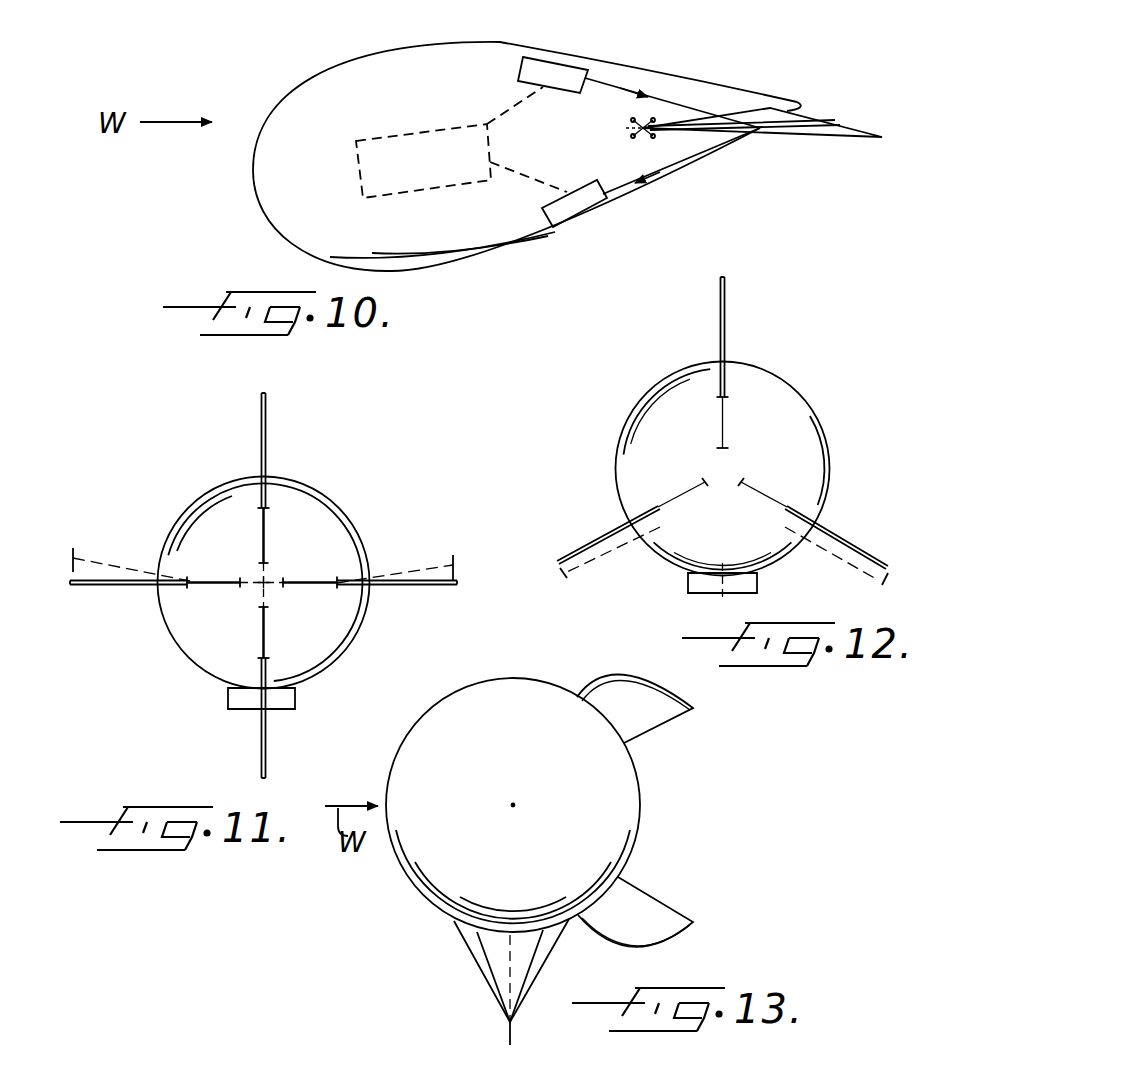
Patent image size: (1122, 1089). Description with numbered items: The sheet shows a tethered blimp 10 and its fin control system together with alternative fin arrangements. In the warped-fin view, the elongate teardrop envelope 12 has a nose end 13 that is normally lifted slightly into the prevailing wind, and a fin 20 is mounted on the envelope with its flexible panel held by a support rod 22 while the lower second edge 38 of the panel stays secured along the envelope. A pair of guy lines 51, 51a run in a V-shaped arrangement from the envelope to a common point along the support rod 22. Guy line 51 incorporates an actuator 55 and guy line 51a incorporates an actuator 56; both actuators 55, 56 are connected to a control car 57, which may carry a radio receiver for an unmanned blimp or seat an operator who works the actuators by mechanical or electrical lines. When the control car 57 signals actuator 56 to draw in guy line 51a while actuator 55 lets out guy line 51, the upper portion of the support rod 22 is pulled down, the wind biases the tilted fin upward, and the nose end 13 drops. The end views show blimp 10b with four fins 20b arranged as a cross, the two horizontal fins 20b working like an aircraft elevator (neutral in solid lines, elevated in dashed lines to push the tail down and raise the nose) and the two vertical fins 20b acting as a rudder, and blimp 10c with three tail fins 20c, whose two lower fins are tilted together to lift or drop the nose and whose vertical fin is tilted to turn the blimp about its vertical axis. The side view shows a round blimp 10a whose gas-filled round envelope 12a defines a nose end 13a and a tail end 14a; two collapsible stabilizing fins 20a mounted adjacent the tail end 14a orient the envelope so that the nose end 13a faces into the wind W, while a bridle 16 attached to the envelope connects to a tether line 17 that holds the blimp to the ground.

In FIG. 10, the blimp 10 is at (298, 82).
In FIG. 10, the envelope 12 is at (410, 70).
In FIG. 10, the nose end 13 is at (256, 197).
In FIG. 10, the actuator 55 is at (520, 78).
In FIG. 10, the actuator 56 is at (547, 210).
In FIG. 10, the control car 57 is at (358, 155).
In FIG. 11, the control car 57 is at (237, 708).
In FIG. 12, the control car 57 is at (757, 582).
In FIG. 10, the guy line 51 is at (673, 100).
In FIG. 10, the guy line 51a is at (670, 163).
In FIG. 10, the second edge 38 is at (747, 116).
In FIG. 10, the fin 20 is at (859, 108).
In FIG. 10, the support rod 22 is at (822, 130).
In FIG. 11, the blimp 10b is at (335, 481).
In FIG. 11, the fins 20b is at (250, 423).
In FIG. 12, the blimp 10c is at (823, 382).
In FIG. 12, the tail fins 20c is at (735, 308).
In FIG. 13, the blimp 10a is at (396, 884).
In FIG. 13, the round envelope 12a is at (455, 735).
In FIG. 13, the nose end 13a is at (390, 772).
In FIG. 13, the tail end 14a is at (637, 830).
In FIG. 13, the stabilizing fins 20a is at (634, 673).
In FIG. 13, the bridle 16 is at (487, 962).
In FIG. 13, the tether line 17 is at (508, 1036).